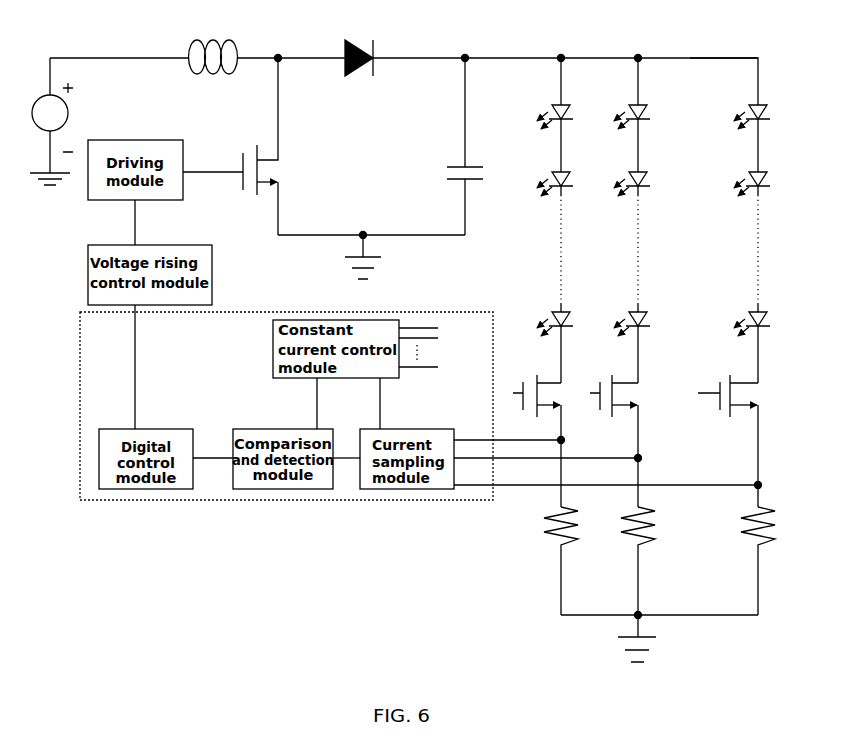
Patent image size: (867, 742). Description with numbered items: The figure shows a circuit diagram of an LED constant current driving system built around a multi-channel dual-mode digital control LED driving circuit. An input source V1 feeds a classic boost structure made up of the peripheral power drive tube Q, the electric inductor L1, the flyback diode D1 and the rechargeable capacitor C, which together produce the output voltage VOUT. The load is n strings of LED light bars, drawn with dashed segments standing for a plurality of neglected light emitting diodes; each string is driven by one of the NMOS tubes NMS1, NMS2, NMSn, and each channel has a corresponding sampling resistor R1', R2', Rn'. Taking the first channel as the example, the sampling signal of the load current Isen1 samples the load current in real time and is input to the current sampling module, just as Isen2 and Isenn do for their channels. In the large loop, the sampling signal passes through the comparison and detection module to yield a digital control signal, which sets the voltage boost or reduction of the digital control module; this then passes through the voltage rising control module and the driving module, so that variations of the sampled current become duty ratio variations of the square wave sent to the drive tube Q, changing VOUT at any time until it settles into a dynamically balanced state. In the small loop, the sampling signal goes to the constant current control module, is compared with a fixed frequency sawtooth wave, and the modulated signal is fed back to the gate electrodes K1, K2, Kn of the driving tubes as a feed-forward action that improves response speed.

The input voltage source V1 is at (67, 121).
The electric inductor L1 is at (213, 68).
The flyback diode D1 is at (359, 68).
The peripheral power drive tube Q is at (241, 146).
The rechargeable capacitor C is at (462, 146).
The output voltage VOUT is at (724, 48).
The gate electrode K1 is at (461, 360).
The gate electrode K2 is at (499, 365).
The gate electrode Kn is at (559, 379).
The NMOS tube NMS1 is at (533, 441).
The NMOS tube NMS2 is at (610, 441).
The NMOS tube NMSn is at (730, 441).
The sampling signal of the load current Isen1 is at (509, 433).
The sampling signal of the load current Isen2 is at (548, 452).
The sampling signal of the load current Isenn is at (608, 479).
The sampling resistor R1' is at (542, 561).
The sampling resistor R2' is at (622, 561).
The sampling resistor Rn' is at (741, 561).